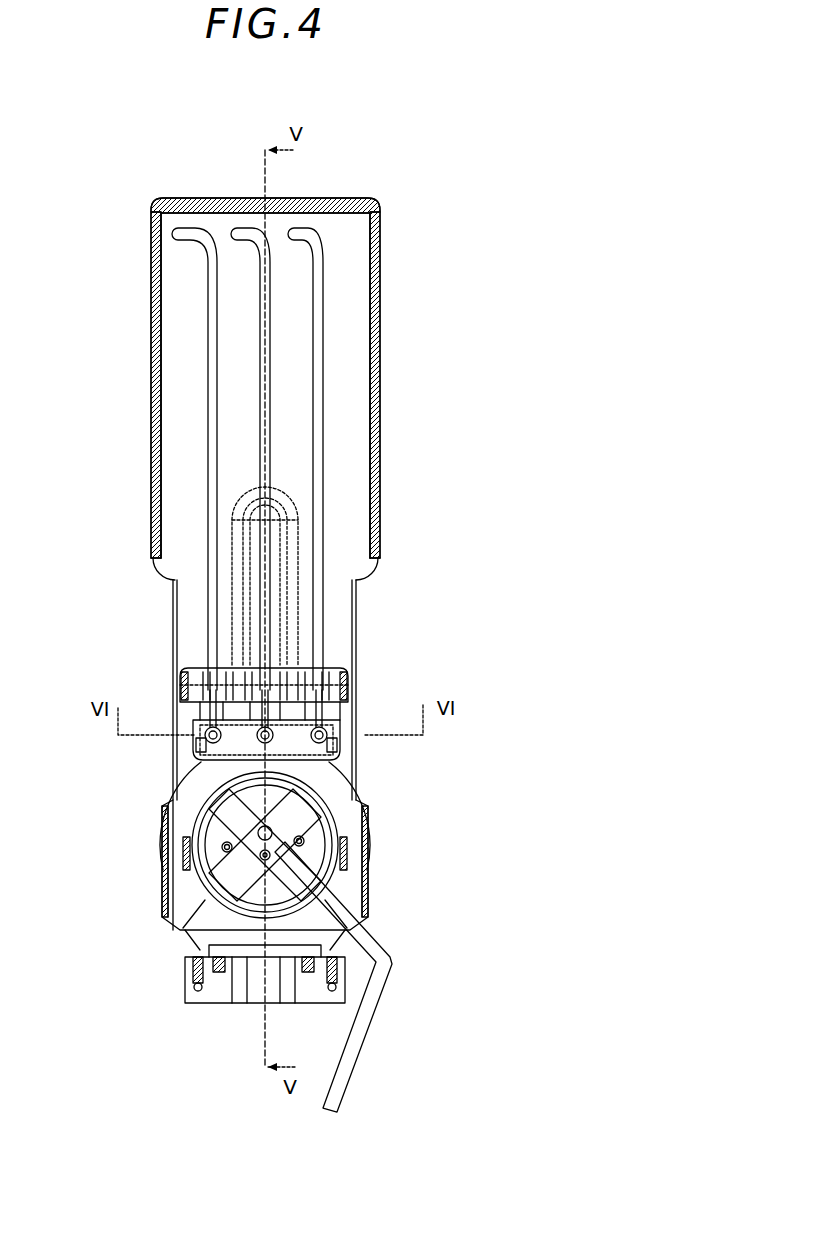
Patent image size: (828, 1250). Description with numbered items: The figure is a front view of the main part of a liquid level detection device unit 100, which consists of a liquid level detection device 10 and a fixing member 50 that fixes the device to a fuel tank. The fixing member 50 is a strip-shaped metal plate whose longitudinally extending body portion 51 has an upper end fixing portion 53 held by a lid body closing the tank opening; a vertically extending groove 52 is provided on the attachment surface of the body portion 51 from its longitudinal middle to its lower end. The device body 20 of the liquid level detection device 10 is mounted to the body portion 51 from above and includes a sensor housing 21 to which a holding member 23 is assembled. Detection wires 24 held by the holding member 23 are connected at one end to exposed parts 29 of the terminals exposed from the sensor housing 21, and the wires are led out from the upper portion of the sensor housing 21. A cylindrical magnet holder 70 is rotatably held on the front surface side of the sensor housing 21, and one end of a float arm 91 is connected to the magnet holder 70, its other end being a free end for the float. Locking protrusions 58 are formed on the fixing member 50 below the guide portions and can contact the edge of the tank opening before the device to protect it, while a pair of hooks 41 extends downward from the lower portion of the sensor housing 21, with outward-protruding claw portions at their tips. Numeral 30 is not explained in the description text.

The liquid level detection device unit 100 is at (418, 208).
The fixing member 50 is at (148, 247).
The upper end fixing portion 53 is at (228, 200).
The body portion 51 is at (172, 507).
The detection wires 24 is at (208, 322).
The groove 52 is at (282, 560).
The holding member 23 is at (352, 705).
The sensor housing 21 is at (170, 890).
The liquid level detection device 10 is at (180, 686).
The terminals 30 is at (215, 695).
The exposed parts 29 is at (352, 735).
The device body 20 is at (370, 888).
The magnet holder 70 is at (325, 830).
The float arm 91 is at (370, 1024).
The locking protrusions 58 is at (188, 982).
The hooks 41 is at (212, 985).